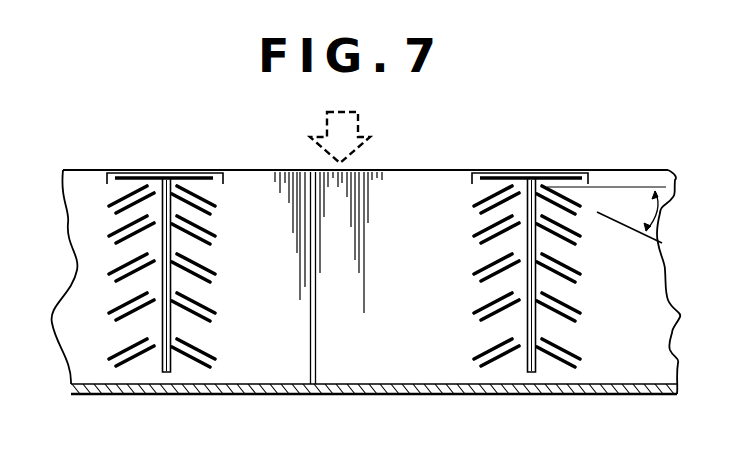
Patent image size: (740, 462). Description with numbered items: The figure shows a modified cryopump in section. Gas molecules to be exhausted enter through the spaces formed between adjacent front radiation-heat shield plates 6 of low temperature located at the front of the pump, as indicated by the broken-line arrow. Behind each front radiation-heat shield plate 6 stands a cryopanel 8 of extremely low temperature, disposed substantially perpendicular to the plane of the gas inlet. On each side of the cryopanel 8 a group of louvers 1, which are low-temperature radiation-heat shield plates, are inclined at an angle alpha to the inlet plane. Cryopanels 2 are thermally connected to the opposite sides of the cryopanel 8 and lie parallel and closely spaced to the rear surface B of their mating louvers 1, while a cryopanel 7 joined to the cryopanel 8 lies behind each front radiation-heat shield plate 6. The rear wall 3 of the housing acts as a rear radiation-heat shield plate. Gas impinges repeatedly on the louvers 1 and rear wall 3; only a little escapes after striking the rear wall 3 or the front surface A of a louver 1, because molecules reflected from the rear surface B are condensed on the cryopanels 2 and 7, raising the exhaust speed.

The louver 1 is at (118, 202).
The cryopanel 2 is at (125, 220).
The rear wall 3 is at (345, 394).
The front radiation-heat shield plate 6 is at (157, 170).
The cryopanel 7 is at (185, 170).
The cryopanel 8 is at (162, 363).
The front surface of the louver A is at (480, 232).
The rear surface of the louver B is at (482, 268).